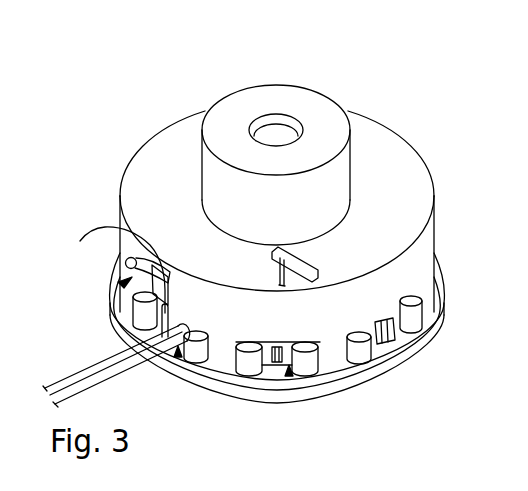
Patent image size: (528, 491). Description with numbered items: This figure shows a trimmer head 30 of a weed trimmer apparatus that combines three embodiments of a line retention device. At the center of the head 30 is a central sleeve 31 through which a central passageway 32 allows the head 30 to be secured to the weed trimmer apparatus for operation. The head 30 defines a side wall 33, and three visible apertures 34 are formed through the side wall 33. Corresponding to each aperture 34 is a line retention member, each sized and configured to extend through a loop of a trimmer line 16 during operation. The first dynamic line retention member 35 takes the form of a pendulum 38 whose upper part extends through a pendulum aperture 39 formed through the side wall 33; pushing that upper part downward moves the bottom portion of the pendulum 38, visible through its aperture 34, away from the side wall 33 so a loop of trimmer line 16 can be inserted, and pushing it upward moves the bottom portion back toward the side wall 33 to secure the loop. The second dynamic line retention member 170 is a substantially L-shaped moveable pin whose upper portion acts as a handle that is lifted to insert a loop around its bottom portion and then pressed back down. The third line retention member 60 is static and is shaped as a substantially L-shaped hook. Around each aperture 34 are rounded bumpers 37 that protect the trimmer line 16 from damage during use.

The head 30 is at (408, 98).
The central sleeve 31 is at (247, 98).
The central passageway 32 is at (287, 120).
The side wall 33 is at (425, 234).
The apertures 34 is at (177, 357).
The first dynamic line retention member 35 is at (170, 308).
The bumpers 37 is at (140, 305).
The pendulum 38 is at (122, 284).
The pendulum aperture 39 is at (102, 227).
The line retention member 60 is at (386, 332).
The trimmer line 16 is at (70, 387).
The line retention member 170 is at (308, 263).